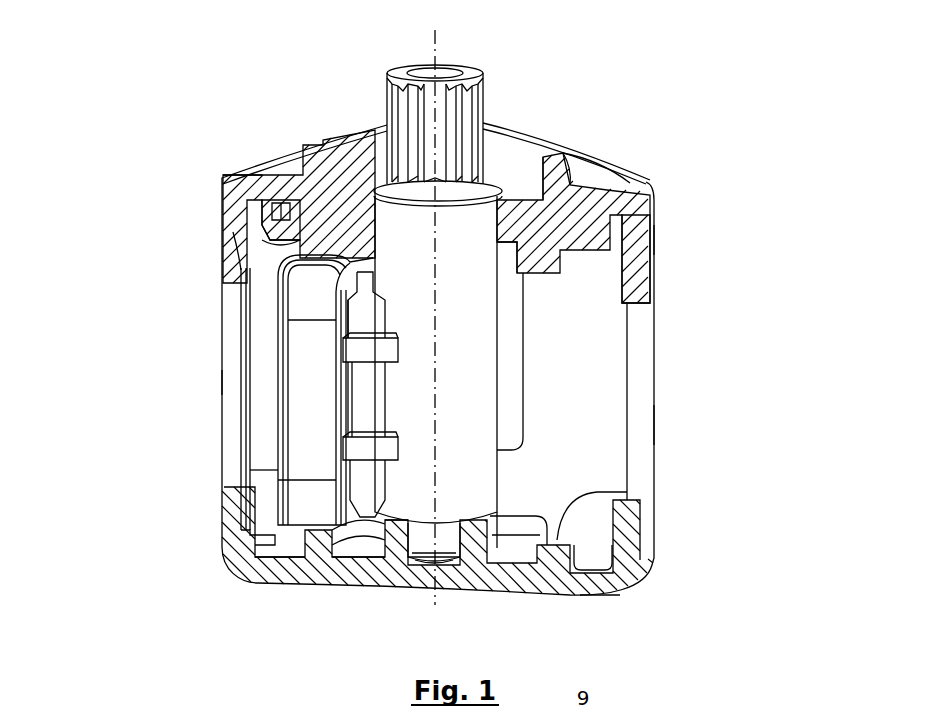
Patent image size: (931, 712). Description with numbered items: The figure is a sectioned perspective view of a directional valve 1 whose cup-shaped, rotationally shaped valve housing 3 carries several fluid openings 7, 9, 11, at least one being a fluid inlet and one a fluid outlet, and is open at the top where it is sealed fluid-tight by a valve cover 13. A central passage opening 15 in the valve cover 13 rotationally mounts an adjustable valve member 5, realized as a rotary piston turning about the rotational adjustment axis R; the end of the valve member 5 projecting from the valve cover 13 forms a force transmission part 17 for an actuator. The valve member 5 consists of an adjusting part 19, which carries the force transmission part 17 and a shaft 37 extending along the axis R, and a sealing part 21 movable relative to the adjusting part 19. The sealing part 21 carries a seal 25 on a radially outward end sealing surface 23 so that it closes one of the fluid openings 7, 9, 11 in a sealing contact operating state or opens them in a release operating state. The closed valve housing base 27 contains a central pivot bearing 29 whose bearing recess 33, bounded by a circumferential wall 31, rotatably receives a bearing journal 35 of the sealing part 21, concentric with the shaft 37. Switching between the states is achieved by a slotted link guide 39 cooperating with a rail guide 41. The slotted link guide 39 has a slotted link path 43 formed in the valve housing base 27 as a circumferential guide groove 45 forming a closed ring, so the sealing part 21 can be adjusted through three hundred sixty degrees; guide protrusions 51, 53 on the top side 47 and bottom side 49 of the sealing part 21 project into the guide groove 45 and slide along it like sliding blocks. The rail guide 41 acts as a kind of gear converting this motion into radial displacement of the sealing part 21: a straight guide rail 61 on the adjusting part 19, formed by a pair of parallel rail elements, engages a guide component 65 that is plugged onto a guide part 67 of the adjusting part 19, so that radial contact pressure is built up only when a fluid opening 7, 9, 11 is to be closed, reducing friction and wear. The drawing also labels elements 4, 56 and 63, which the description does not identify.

The directional valve 1 is at (770, 233).
The valve housing 3 is at (660, 243).
The housing ring 4 is at (625, 277).
The valve member 5 is at (503, 348).
The fluid opening 7 is at (222, 382).
The fluid opening 9 is at (600, 225).
The fluid opening 11 is at (665, 425).
The valve cover 13 is at (505, 302).
The central passage opening 15 is at (601, 152).
The force transmission part 17 is at (478, 105).
The adjusting part 19 is at (503, 466).
The sealing part 21 is at (272, 482).
The end sealing surface 23 is at (250, 256).
The seal 25 is at (285, 433).
The valve housing base 27 is at (352, 580).
The central pivot bearing 29 is at (404, 570).
The circumferential wall 31 is at (503, 553).
The bearing recess 33 is at (487, 560).
The bearing journal 35 is at (447, 545).
The shaft 37 is at (477, 392).
The slotted link guide 39 is at (245, 232).
The rail guide 41 is at (365, 330).
The slotted link path 43 is at (575, 542).
The guide groove 45 is at (604, 598).
The top side 47 is at (241, 272).
The bottom side 49 is at (255, 547).
The guide protrusion 51 is at (243, 176).
The guide protrusion 53 is at (283, 565).
The ring 56 is at (588, 545).
The guide rail 61 is at (275, 499).
The piston element 63 is at (360, 400).
The guide component 65 is at (300, 347).
The guide part 67 is at (362, 358).
The rotational adjustment axis R is at (434, 57).